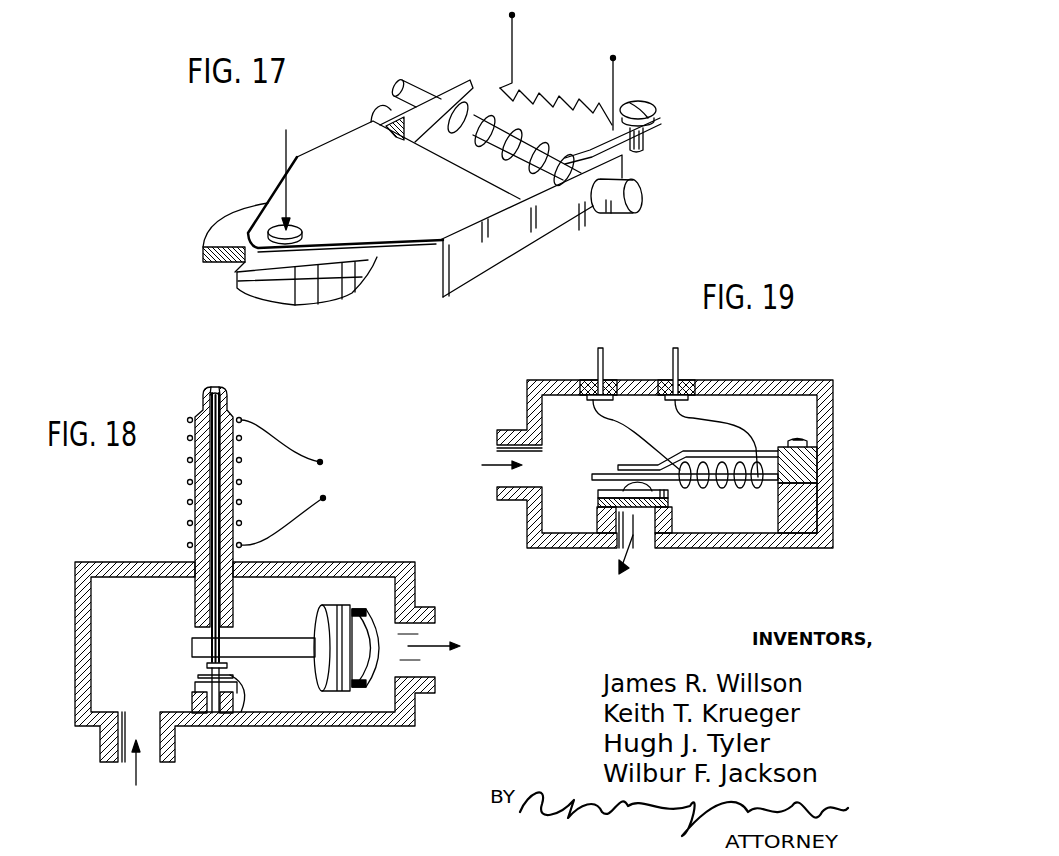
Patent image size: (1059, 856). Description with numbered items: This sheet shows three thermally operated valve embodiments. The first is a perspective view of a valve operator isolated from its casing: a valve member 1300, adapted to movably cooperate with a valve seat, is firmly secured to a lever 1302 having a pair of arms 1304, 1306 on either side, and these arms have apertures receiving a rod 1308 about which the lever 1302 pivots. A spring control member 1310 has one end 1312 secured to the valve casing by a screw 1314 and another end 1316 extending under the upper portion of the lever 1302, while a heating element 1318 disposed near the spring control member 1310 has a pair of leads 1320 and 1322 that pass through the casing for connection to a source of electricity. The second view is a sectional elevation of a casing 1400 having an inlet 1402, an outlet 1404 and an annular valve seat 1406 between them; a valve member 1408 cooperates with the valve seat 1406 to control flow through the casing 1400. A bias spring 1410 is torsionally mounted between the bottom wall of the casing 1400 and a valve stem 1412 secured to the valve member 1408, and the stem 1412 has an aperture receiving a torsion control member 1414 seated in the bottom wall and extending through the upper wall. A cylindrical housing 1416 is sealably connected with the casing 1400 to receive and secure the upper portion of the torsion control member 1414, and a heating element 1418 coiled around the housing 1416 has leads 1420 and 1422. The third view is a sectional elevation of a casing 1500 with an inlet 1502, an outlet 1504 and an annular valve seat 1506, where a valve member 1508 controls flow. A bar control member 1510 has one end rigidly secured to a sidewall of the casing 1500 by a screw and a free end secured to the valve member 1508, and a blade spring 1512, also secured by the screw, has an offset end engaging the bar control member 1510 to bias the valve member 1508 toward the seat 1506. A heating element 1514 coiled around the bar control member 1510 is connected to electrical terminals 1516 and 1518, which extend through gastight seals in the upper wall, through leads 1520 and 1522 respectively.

In FIG. 17, the valve member 1300 is at (313, 293).
In FIG. 17, the lever 1302 is at (467, 277).
In FIG. 17, the arm 1304 is at (560, 227).
In FIG. 17, the arm 1306 is at (452, 82).
In FIG. 17, the rod 1308 is at (620, 187).
In FIG. 17, the spring control member 1310 is at (492, 96).
In FIG. 17, the end of spring control member 1312 is at (655, 122).
In FIG. 17, the screw 1314 is at (658, 108).
In FIG. 17, the end of spring control member 1316 is at (413, 130).
In FIG. 17, the heating element 1318 is at (528, 126).
In FIG. 17, the lead 1320 is at (514, 40).
In FIG. 17, the lead 1322 is at (616, 78).
In FIG. 18, the casing 1400 is at (352, 565).
In FIG. 18, the inlet 1402 is at (157, 750).
In FIG. 18, the outlet 1404 is at (437, 667).
In FIG. 18, the annular valve seat 1406 is at (368, 690).
In FIG. 18, the valve member 1408 is at (337, 692).
In FIG. 18, the bias spring 1410 is at (243, 692).
In FIG. 18, the valve stem 1412 is at (281, 658).
In FIG. 18, the torsion control member 1414 is at (213, 510).
In FIG. 18, the cylindrical housing 1416 is at (242, 477).
In FIG. 18, the heating element 1418 is at (188, 481).
In FIG. 18, the lead 1420 is at (314, 502).
In FIG. 18, the lead 1422 is at (316, 461).
In FIG. 19, the casing 1500 is at (818, 382).
In FIG. 19, the inlet 1502 is at (505, 483).
In FIG. 19, the outlet 1504 is at (653, 535).
In FIG. 19, the annular valve seat 1506 is at (677, 512).
In FIG. 19, the valve member 1508 is at (592, 503).
In FIG. 19, the bar control member 1510 is at (825, 482).
In FIG. 19, the blade spring 1512 is at (790, 445).
In FIG. 19, the heating element 1514 is at (697, 487).
In FIG. 19, the electrical terminal 1516 is at (597, 357).
In FIG. 19, the electrical terminal 1518 is at (679, 364).
In FIG. 19, the lead 1520 is at (613, 418).
In FIG. 19, the lead 1522 is at (720, 420).